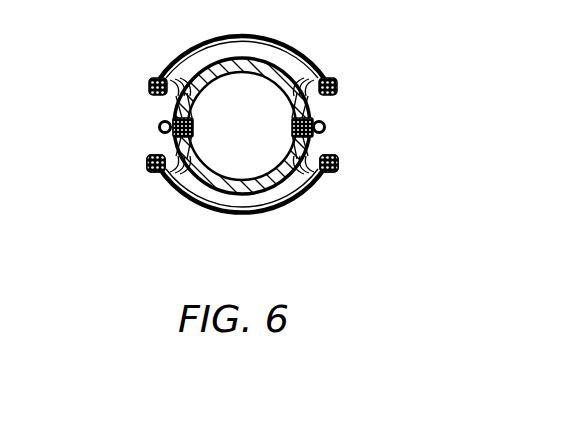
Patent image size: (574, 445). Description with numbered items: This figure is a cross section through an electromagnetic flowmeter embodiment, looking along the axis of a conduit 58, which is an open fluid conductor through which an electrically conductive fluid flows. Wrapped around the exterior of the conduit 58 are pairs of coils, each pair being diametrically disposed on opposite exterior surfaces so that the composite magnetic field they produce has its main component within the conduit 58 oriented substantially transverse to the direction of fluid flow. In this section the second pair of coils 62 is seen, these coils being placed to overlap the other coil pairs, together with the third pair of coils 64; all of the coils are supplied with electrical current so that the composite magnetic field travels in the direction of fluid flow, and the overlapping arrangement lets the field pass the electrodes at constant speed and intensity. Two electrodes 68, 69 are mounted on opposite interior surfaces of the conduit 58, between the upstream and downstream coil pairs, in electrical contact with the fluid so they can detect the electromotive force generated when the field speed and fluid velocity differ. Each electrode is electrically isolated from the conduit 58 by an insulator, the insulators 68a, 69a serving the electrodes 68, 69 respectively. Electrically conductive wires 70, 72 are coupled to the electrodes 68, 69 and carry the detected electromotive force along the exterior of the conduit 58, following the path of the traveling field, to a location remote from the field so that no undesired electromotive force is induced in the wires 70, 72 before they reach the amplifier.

The conduit 58 is at (237, 60).
The second pair of coils 62 is at (309, 61).
The third pair of coils 64 is at (270, 38).
The electrode 68 is at (313, 117).
The insulator 68a is at (318, 135).
The electrode 69 is at (172, 123).
The insulator 69a is at (172, 134).
The electrically conductive wire 70 is at (326, 127).
The electrically conductive wire 72 is at (159, 127).